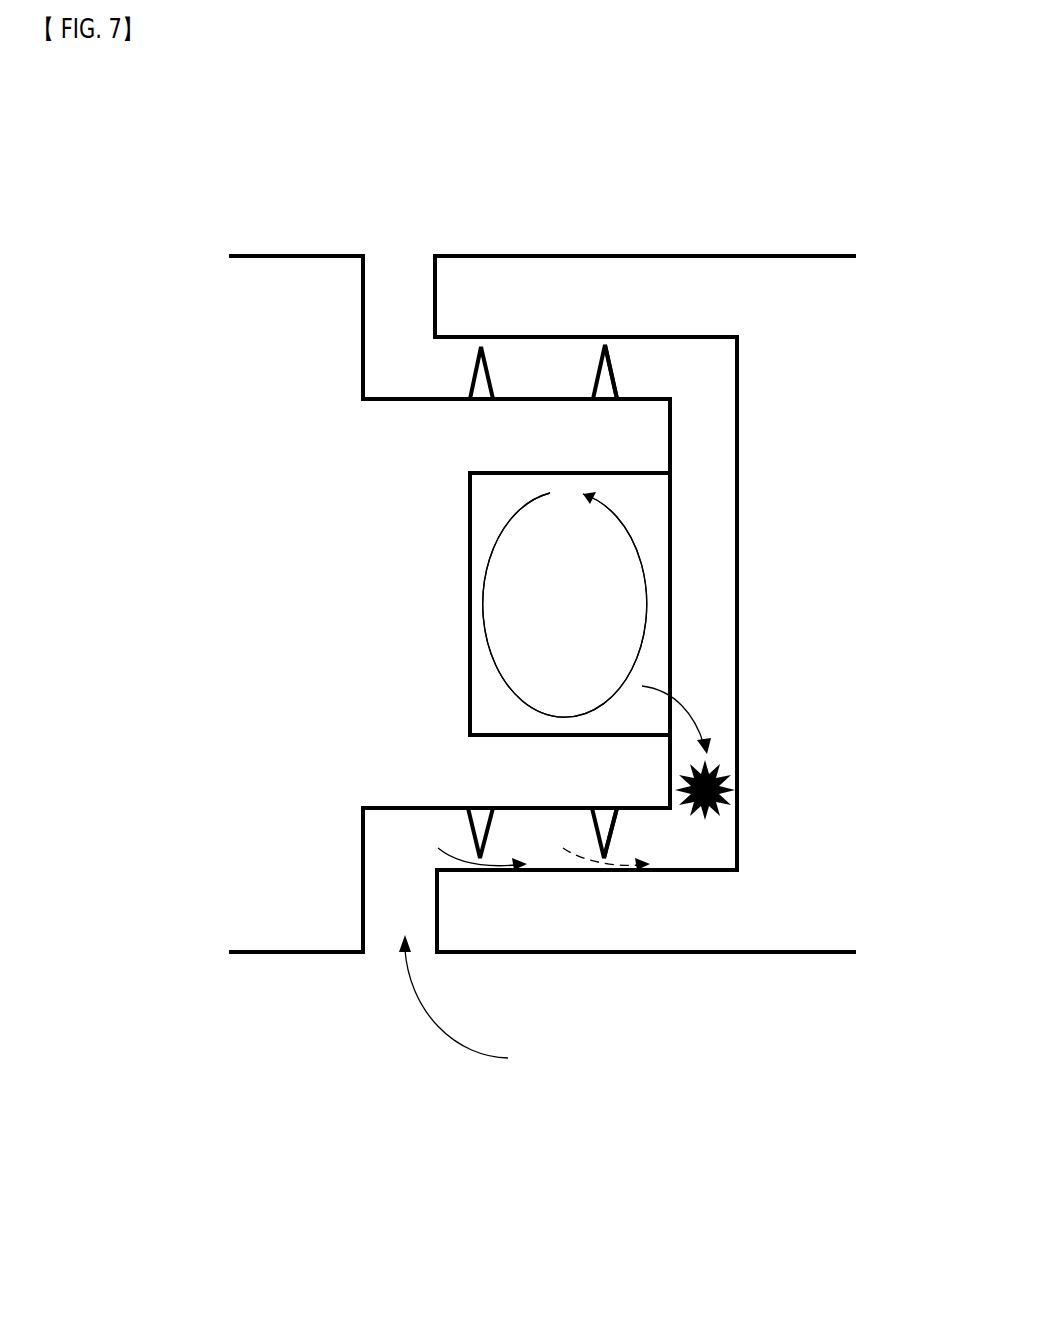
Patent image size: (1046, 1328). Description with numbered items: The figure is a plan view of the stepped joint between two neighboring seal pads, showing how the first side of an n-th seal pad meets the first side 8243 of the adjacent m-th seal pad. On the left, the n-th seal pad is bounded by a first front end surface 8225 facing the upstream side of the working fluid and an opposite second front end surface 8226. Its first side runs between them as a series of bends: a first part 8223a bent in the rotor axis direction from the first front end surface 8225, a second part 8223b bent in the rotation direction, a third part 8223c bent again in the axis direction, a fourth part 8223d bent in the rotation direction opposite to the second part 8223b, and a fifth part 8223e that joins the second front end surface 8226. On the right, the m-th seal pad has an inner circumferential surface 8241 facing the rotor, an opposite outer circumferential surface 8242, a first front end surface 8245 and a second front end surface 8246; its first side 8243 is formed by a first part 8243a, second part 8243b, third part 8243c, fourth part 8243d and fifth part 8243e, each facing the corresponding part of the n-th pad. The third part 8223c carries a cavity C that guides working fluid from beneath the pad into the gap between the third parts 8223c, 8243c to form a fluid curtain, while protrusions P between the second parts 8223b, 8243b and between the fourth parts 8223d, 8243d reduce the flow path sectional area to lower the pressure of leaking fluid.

The second front end surface 8226 is at (300, 255).
The first front end surface 8225 is at (298, 953).
The second front end surface 8246 is at (738, 256).
The first front end surface 8245 is at (640, 953).
The inner circumferential surface 8241 is at (725, 925).
The outer circumferential surface 8242 is at (790, 930).
The first part 8223a is at (363, 927).
The second part 8223b is at (540, 810).
The third part 8223c is at (671, 434).
The fourth part 8223d is at (515, 398).
The fifth part 8223e is at (368, 279).
The first part 8243a is at (436, 885).
The second part 8243b is at (545, 872).
The third part 8243c is at (737, 484).
The fourth part 8243d is at (565, 341).
The fifth part 8243e is at (418, 279).
The first side 8243 is at (331, 1097).
The protrusion P is at (605, 380).
The cavity C is at (662, 530).